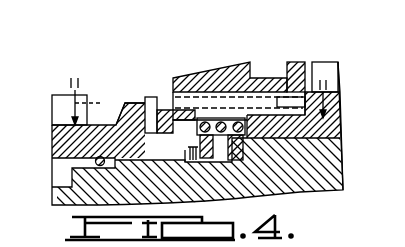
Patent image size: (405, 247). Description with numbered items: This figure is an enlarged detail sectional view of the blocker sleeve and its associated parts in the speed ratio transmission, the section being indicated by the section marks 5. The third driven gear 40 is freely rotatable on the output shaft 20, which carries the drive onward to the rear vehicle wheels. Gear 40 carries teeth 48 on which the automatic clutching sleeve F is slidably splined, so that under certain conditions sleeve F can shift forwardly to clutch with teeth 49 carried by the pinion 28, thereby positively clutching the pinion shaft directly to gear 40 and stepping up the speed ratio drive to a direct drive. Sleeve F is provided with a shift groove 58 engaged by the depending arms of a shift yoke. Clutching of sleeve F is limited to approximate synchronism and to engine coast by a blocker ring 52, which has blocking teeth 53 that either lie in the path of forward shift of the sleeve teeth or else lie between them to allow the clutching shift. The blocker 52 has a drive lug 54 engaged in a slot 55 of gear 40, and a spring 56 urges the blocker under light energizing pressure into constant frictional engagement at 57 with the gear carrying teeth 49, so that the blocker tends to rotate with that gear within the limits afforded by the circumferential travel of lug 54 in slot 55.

The section line 5- 5 is at (201, 94).
The output shaft 20 is at (330, 170).
The pinion 28 is at (53, 110).
The third driven gear 40 is at (328, 62).
The teeth 48 is at (337, 120).
The teeth 49 is at (126, 103).
The blocker ring 52 is at (168, 137).
The blocking teeth 53 is at (152, 97).
The drive lug 54 is at (178, 112).
The slot 55 is at (200, 117).
The spring 56 is at (275, 115).
The frictional engagement 57 is at (185, 150).
The shift groove 58 is at (290, 62).
The automatic clutching sleeve F is at (226, 58).